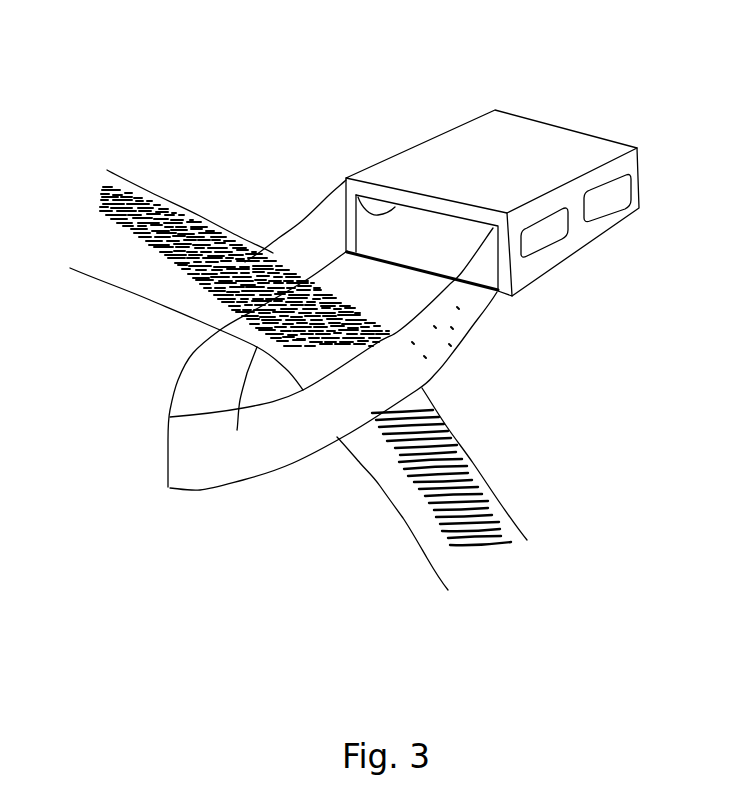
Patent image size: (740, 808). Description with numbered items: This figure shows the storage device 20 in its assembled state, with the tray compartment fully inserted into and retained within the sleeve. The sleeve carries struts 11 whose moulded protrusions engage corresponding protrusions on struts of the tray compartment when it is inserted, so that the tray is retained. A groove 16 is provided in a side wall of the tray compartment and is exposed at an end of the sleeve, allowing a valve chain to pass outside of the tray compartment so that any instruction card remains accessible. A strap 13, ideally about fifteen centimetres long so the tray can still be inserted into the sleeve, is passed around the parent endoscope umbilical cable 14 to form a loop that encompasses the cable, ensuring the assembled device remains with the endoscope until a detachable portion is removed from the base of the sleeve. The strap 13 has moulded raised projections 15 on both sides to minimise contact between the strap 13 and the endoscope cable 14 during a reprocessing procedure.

The storage device 20 is at (540, 117).
The groove 16 is at (346, 178).
The struts 11 is at (553, 233).
The endoscope umbilical cable 14 is at (170, 197).
The strap 13 is at (173, 357).
The moulded raised projections 15 is at (452, 350).